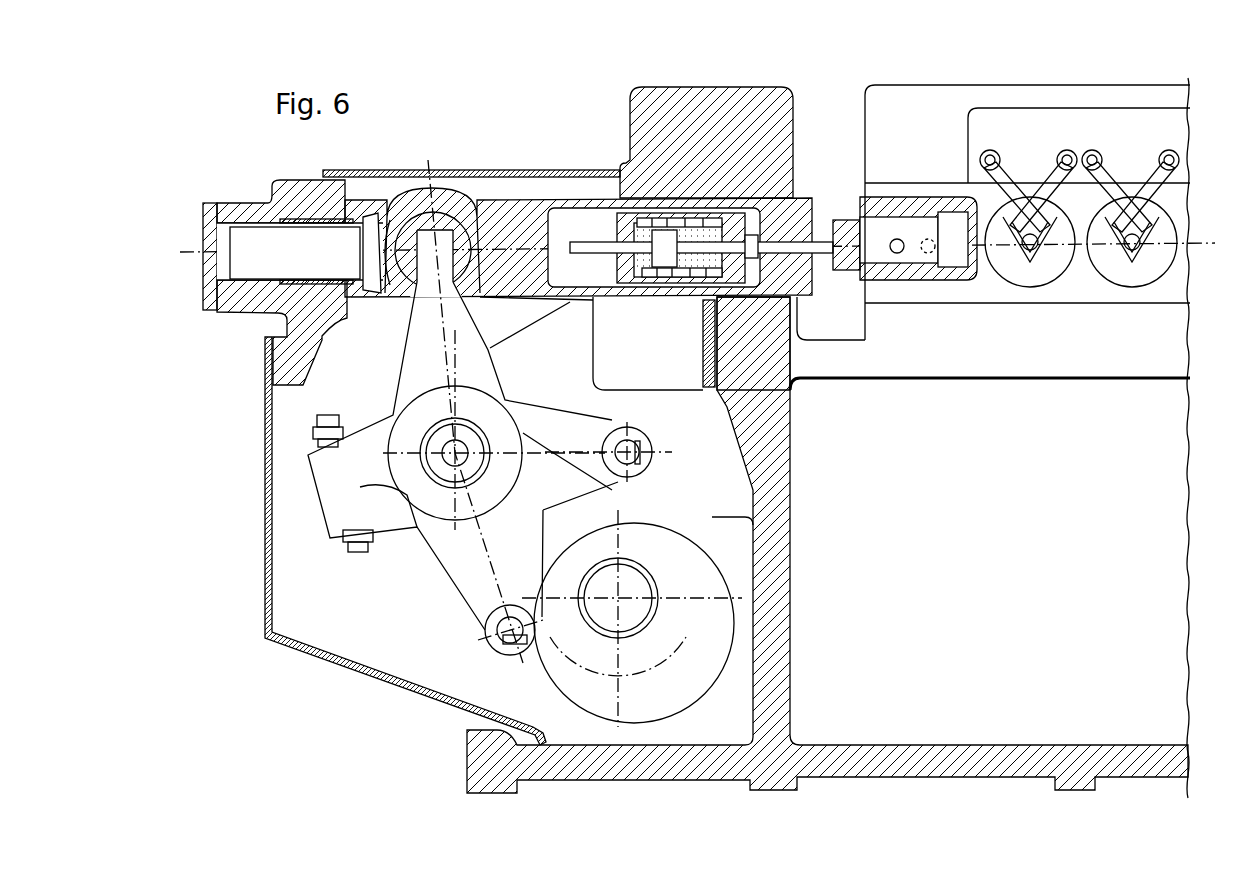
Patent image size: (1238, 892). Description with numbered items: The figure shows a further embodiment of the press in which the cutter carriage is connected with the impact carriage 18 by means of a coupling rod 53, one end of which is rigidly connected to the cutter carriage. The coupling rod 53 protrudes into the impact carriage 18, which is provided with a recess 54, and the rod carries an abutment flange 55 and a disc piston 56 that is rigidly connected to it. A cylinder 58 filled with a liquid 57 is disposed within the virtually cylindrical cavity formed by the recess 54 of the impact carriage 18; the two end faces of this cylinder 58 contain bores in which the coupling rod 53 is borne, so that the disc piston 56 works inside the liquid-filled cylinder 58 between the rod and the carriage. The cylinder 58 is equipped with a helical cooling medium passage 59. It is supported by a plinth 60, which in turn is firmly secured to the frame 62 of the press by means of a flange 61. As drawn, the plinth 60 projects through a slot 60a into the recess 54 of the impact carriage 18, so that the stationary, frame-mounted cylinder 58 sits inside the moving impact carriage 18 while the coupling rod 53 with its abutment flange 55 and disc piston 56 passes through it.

The impact carriage 18 is at (493, 217).
The coupling rod 53 is at (827, 250).
The recess 54 is at (557, 227).
The abutment flange 55 is at (753, 242).
The disc piston 56 is at (593, 333).
The liquid 57 is at (705, 225).
The cylinder 58 is at (628, 213).
The helical cooling medium passage 59 is at (658, 262).
The plinth 60 is at (687, 333).
The slot 60a is at (587, 313).
The flange 61 is at (717, 350).
The frame 62 is at (777, 557).